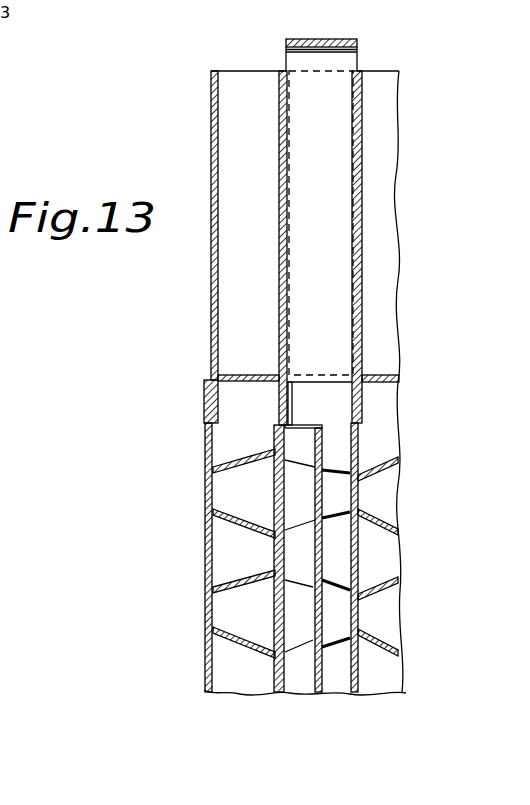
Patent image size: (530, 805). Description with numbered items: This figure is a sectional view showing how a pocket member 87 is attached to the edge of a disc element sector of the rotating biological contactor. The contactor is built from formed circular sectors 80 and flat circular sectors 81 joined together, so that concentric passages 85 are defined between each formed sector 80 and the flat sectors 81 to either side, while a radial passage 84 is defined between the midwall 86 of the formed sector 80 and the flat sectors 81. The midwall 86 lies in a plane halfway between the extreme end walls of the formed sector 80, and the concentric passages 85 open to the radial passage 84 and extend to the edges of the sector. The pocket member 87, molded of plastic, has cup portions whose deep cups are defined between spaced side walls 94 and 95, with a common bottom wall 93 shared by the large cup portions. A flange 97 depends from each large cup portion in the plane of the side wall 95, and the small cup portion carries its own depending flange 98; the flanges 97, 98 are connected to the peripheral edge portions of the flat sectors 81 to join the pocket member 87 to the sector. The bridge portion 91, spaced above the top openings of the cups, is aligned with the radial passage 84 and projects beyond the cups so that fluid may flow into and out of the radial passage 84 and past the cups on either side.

The pocket member 87 is at (226, 72).
The bridge portion 91 is at (336, 40).
The side wall 94 is at (280, 105).
The side wall 95 is at (218, 272).
The common bottom wall 93 is at (244, 375).
The depending flange 98 is at (296, 380).
The flange 97 is at (210, 395).
The radial passage 84 is at (330, 436).
The formed circular sector 80 is at (328, 472).
The flat circular sector 81 is at (214, 462).
The concentric passage 85 is at (240, 490).
The midwall 86 is at (323, 556).